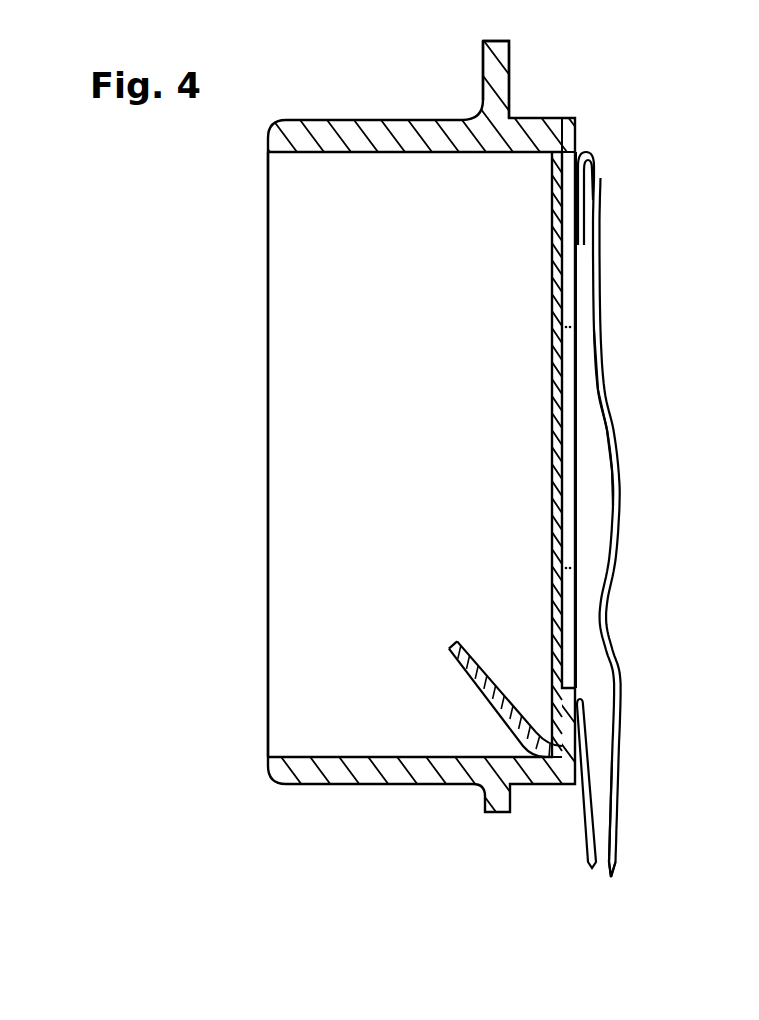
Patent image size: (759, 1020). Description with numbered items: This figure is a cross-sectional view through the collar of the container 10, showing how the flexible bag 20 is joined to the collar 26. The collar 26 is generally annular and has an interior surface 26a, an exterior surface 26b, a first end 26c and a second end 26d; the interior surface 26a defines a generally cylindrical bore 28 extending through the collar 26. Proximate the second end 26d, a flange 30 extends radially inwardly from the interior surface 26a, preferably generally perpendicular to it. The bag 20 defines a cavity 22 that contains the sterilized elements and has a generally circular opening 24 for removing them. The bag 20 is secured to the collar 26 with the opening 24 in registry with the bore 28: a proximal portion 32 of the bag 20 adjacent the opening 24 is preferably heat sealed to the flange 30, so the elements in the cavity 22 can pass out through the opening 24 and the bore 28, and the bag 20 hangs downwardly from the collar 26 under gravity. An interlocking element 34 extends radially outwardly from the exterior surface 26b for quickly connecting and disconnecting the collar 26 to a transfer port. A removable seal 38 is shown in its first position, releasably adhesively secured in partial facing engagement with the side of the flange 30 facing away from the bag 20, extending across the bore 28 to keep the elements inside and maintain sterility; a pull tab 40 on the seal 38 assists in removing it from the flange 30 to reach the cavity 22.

The container 10 is at (603, 97).
The flexible bag 20 is at (618, 668).
The cavity 22 is at (600, 833).
The opening 24 is at (577, 448).
The collar 26 is at (338, 143).
The interior surface 26a is at (403, 152).
The exterior surface 26b is at (318, 120).
The first end 26c is at (265, 308).
The second end 26d is at (575, 137).
The bore 28 is at (283, 502).
The flange 30 is at (574, 210).
The proximal portion 32 is at (595, 187).
The interlocking element 34 is at (497, 65).
The removable seal 38 is at (557, 485).
The pull tab 40 is at (452, 652).